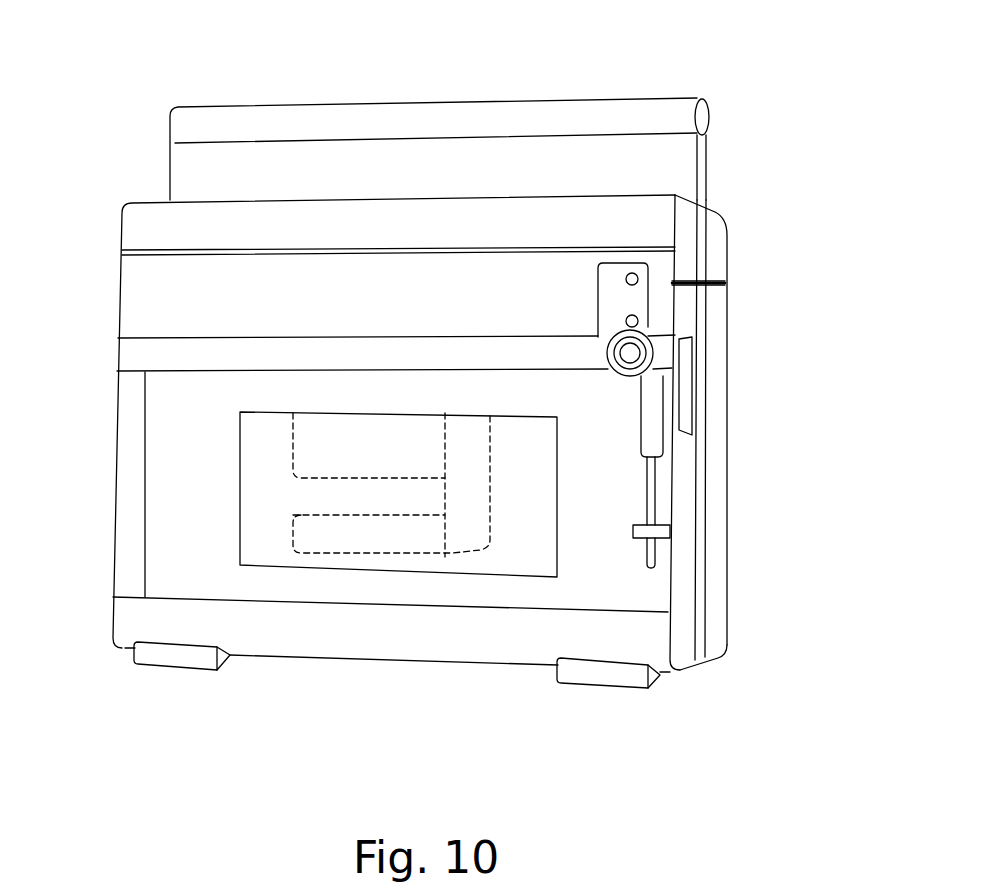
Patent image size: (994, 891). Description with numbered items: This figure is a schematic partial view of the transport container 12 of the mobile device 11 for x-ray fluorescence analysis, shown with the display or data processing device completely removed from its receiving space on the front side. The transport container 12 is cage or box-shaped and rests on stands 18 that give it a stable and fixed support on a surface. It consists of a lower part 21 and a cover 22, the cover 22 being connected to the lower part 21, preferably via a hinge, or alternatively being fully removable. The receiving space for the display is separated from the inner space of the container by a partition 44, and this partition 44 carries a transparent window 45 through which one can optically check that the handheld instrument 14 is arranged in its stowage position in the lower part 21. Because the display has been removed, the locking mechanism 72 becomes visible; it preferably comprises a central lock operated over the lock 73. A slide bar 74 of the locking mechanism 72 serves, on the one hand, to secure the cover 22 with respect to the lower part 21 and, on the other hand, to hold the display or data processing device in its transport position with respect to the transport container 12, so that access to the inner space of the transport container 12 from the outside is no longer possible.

The mobile device 11 is at (722, 108).
The transport container 12 is at (732, 453).
The handheld instrument 14 is at (335, 447).
The stands 18 is at (598, 702).
The lower part 21 is at (713, 540).
The cover 22 is at (713, 220).
The partition 44 is at (167, 548).
The window 45 is at (235, 470).
The locking mechanism 72 is at (663, 318).
The lock 73 is at (630, 352).
The slide bar 74 is at (627, 295).